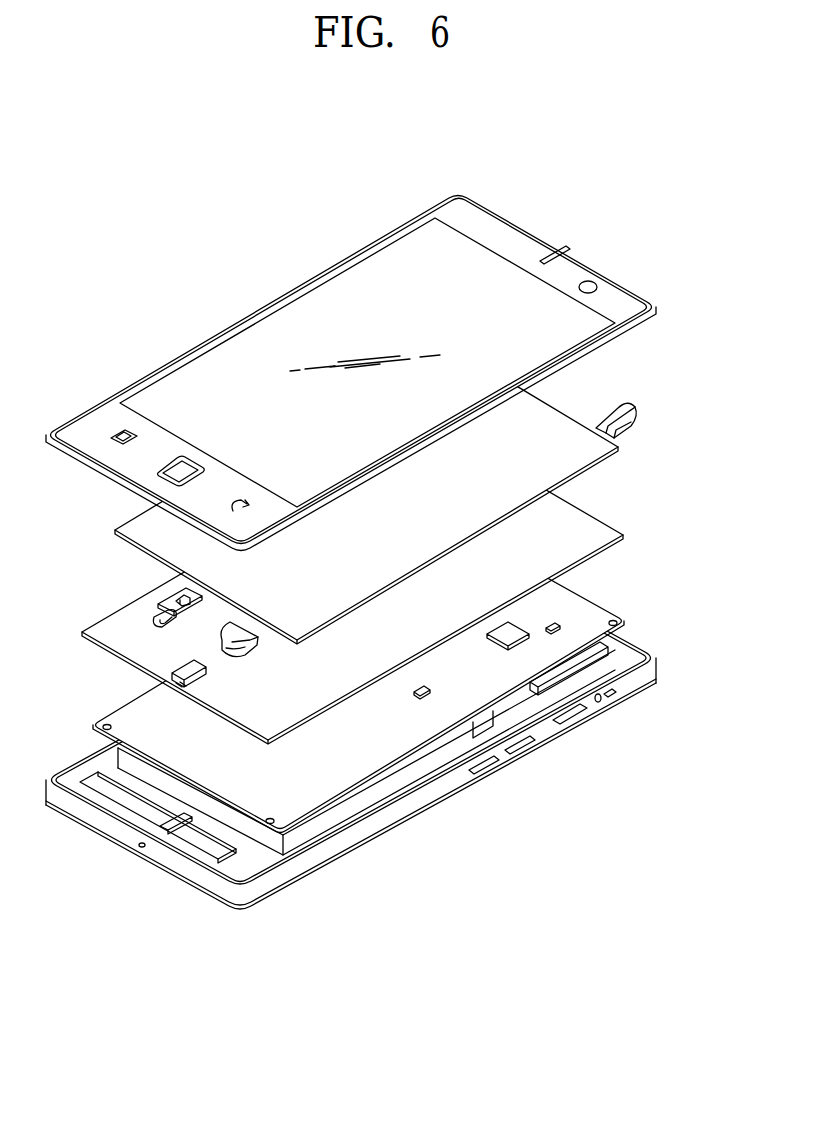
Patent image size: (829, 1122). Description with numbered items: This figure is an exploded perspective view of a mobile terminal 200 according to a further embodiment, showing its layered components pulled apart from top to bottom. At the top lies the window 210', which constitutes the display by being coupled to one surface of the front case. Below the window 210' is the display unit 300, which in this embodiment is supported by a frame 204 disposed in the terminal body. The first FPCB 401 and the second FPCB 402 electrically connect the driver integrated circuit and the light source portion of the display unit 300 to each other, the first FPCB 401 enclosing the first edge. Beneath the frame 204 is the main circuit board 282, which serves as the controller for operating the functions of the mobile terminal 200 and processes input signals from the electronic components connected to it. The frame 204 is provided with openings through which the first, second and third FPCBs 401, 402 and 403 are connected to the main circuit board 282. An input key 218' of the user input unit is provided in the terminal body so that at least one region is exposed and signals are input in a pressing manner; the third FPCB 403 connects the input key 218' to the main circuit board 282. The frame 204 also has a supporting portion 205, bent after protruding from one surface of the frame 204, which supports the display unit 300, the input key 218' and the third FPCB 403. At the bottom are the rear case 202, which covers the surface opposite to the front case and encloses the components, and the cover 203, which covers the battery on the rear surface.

The mobile terminal 200 is at (72, 523).
The window 210' is at (369, 373).
The display unit 300 is at (628, 459).
The first flexible printed circuit board 401 is at (630, 419).
The frame 204 is at (602, 532).
The main circuit board 282 is at (592, 613).
The rear case 202 is at (653, 648).
The cover 203 is at (655, 684).
The input key 218' is at (121, 593).
The third flexible printed circuit board 403 is at (152, 614).
The second flexible printed circuit board 402 is at (225, 633).
The supporting portion 205 is at (180, 658).